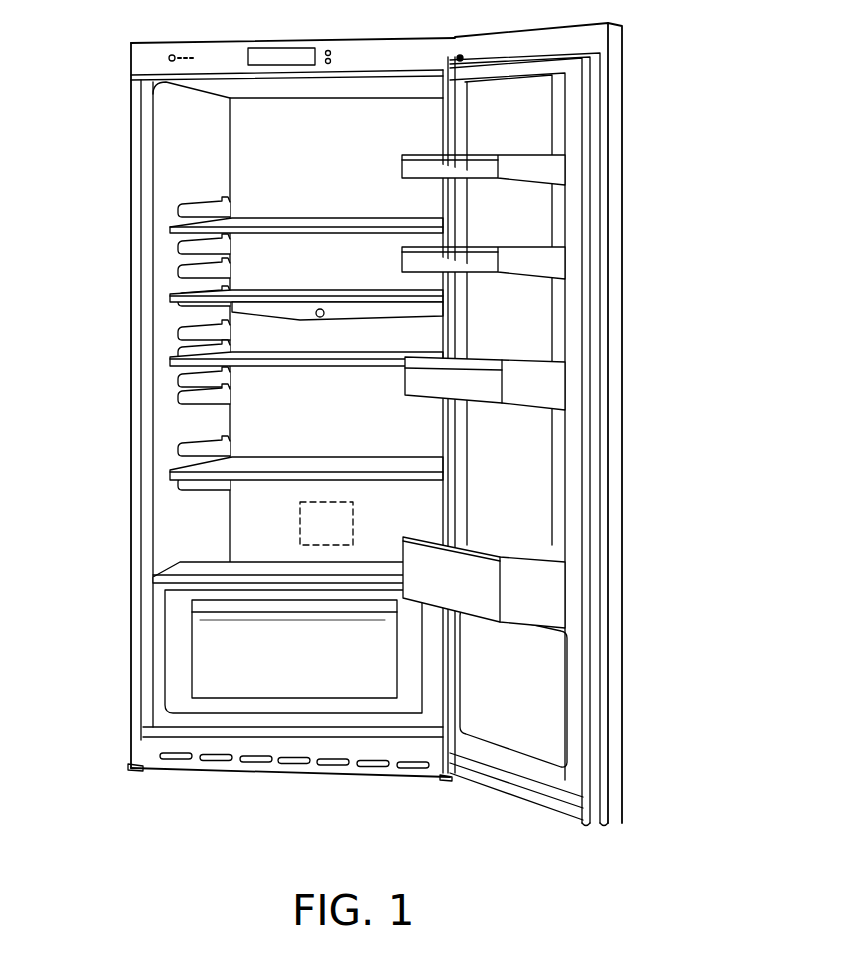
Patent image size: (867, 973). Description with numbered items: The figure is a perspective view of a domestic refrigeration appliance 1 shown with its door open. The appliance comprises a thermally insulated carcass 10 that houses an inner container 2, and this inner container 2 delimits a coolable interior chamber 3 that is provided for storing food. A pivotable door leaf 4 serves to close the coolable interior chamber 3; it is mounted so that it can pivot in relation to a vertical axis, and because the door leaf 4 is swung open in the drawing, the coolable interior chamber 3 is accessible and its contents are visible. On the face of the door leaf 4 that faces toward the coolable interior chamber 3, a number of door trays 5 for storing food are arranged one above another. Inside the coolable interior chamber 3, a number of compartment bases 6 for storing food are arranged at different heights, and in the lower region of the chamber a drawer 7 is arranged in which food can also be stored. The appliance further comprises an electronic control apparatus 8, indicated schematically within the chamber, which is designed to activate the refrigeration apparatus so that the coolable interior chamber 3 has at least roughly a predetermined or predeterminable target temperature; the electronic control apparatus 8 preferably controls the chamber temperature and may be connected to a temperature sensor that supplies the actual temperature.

The domestic refrigeration appliance 1 is at (374, 421).
The inner container 2 is at (167, 247).
The coolable interior chamber 3 is at (305, 161).
The door leaf 4 is at (623, 808).
The door trays 5 is at (543, 173).
The compartment bases 6 is at (262, 222).
The drawer 7 is at (294, 676).
The electronic control apparatus 8 is at (315, 513).
The thermally insulated carcass 10 is at (137, 632).